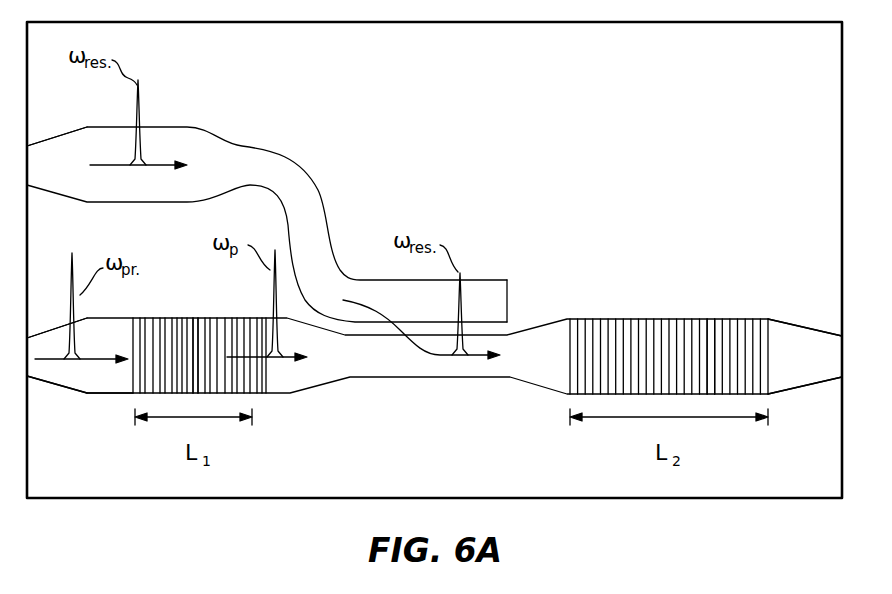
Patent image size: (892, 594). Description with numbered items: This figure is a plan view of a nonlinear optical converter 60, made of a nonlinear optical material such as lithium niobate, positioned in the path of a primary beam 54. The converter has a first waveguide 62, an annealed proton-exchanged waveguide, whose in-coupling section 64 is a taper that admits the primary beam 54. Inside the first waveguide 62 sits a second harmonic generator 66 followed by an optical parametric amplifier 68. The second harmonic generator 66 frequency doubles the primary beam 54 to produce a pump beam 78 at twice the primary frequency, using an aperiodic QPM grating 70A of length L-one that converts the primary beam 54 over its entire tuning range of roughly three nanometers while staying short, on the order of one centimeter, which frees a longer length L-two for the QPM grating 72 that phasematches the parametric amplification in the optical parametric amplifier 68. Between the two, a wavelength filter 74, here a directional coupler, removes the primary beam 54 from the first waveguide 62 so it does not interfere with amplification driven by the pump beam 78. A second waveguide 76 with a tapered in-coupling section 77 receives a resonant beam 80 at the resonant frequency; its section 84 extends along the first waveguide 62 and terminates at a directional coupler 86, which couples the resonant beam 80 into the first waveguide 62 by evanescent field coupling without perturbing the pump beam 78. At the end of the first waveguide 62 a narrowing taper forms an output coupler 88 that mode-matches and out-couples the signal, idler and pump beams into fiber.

The nonlinear optical converter 60 is at (482, 123).
The primary beam 54 is at (83, 362).
The first waveguide 62 is at (100, 388).
The in-coupling section 64 is at (45, 340).
The second harmonic generator 66 is at (176, 289).
The aperiodic QPM grating 70A is at (200, 330).
The pump beam 78 is at (267, 362).
The wavelength filter 74 is at (417, 380).
The second waveguide 76 is at (234, 152).
The in-coupling section 77 is at (45, 148).
The resonant beam 80 is at (163, 156).
The section 84 is at (484, 288).
The directional coupler 86 is at (543, 315).
The optical parametric amplifier 68 is at (683, 293).
The QPM grating 72 is at (713, 325).
The output coupler 88 is at (805, 338).